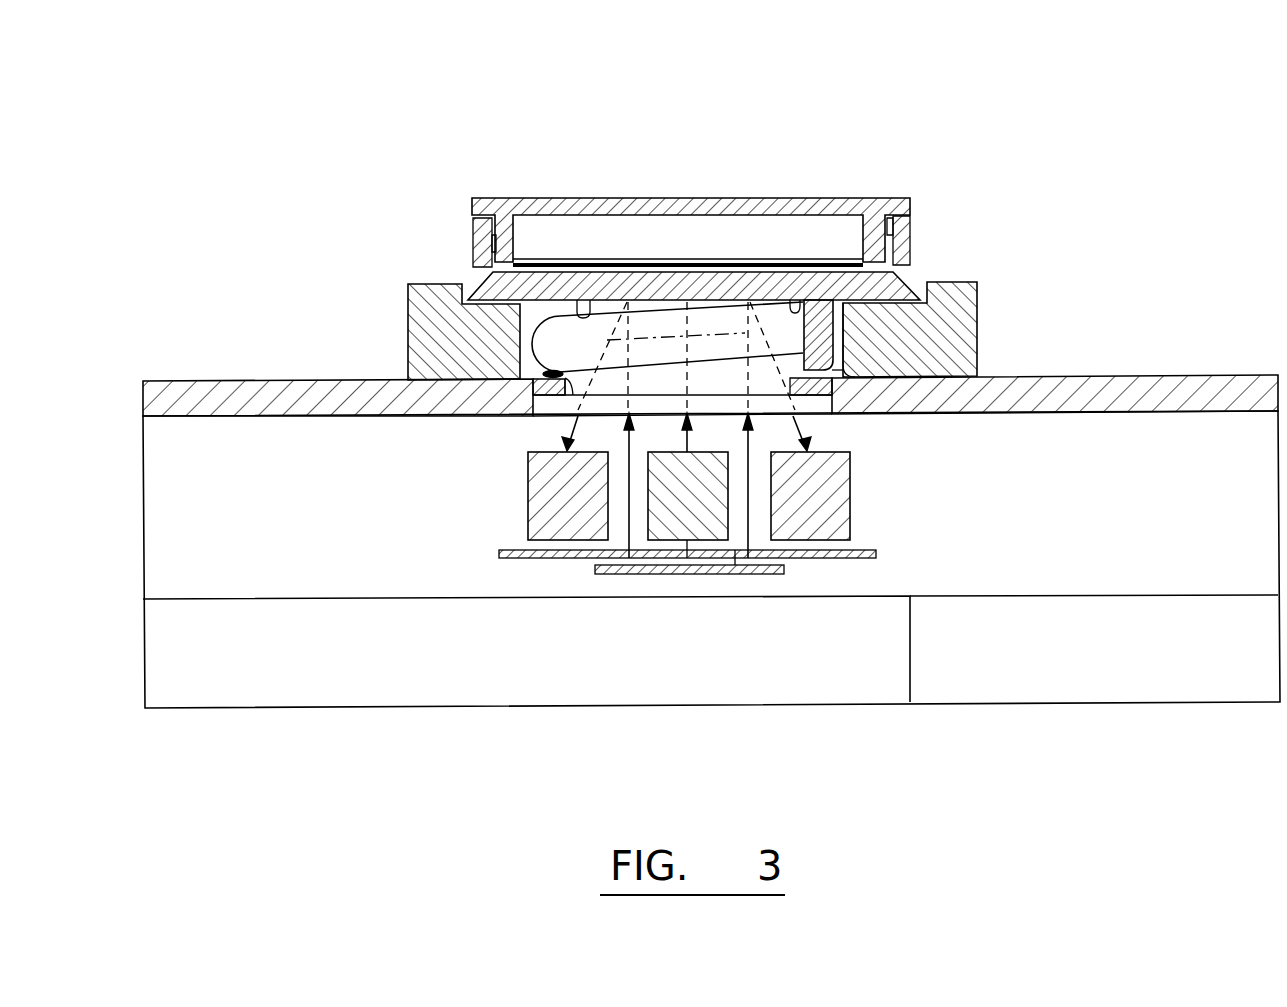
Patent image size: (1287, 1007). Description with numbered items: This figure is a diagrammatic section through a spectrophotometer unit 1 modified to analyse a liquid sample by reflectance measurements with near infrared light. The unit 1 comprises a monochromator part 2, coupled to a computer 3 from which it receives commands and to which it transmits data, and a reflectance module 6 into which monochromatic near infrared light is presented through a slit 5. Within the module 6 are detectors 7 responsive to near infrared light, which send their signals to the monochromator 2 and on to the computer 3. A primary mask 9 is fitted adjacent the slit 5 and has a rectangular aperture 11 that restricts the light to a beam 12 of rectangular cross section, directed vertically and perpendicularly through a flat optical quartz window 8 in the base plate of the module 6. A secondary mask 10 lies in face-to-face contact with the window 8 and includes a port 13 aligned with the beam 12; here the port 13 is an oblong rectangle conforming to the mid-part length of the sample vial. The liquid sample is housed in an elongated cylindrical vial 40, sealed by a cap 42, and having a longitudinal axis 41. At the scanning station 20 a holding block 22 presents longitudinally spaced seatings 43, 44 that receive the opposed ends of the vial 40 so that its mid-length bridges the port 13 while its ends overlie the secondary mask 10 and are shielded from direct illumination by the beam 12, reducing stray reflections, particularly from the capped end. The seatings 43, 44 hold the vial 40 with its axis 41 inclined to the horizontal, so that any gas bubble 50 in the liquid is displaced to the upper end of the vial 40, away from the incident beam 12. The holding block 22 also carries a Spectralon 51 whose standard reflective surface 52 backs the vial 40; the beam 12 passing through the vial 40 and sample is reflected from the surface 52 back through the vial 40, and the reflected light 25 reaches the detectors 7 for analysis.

The spectrophotometer unit 1 is at (208, 722).
The monochromator part 2 is at (368, 668).
The computer 3 is at (1088, 664).
The slit 5 is at (700, 574).
The reflectance module 6 is at (232, 374).
The sensors or detectors 7 is at (545, 492).
The optical quartz window 8 is at (540, 399).
The primary mask 9 is at (512, 557).
The secondary mask 10 is at (557, 410).
The rectangular aperture 11 is at (735, 557).
The beam 12 is at (628, 508).
The port 13 is at (576, 370).
The scanning station 20 is at (681, 184).
The holding block 22 is at (443, 300).
The reflected light 25 is at (778, 357).
The vial or tube 40 is at (725, 317).
The longitudinal axis 41 is at (713, 333).
The cap 42 is at (834, 333).
The seating 43 is at (838, 348).
The seating 44 is at (527, 345).
The gas bubble 50 is at (798, 303).
The Spectralon 51 is at (520, 198).
The light reflective surface 52 is at (582, 300).